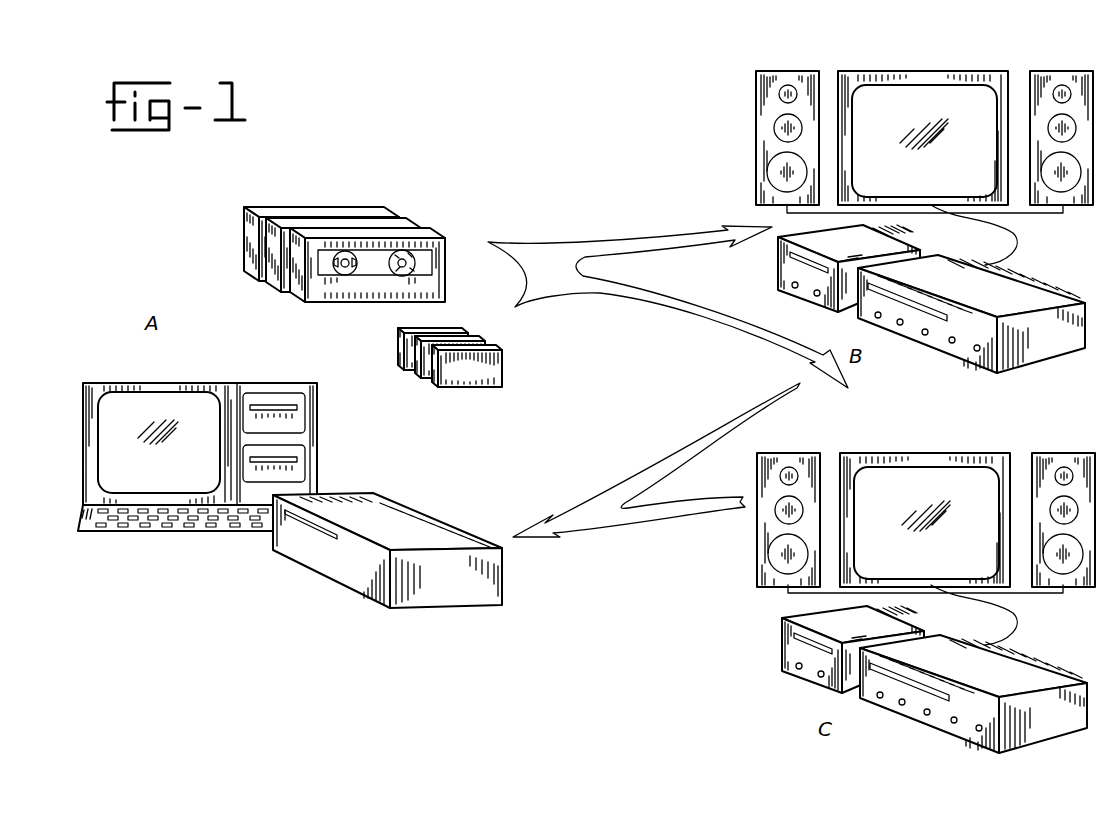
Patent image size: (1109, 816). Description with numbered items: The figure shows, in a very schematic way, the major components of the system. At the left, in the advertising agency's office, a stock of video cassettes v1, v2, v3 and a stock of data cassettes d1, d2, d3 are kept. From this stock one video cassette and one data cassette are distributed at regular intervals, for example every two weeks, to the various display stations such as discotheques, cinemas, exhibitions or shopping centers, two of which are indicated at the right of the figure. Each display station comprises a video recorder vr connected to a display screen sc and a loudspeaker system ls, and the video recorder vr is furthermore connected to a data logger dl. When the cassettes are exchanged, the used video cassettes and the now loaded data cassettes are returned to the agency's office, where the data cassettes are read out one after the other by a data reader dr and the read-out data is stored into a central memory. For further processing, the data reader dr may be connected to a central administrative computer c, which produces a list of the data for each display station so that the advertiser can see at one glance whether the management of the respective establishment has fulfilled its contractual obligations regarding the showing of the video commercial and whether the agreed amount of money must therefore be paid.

The video cassette v1 is at (244, 262).
The video cassette v2 is at (266, 279).
The video cassette v3 is at (296, 294).
The data cassette d1 is at (396, 352).
The data cassette d2 is at (413, 367).
The data cassette d3 is at (431, 377).
The central administrative computer c is at (98, 392).
The data reader dr is at (298, 555).
The loudspeaker system ls is at (791, 70).
The display screen sc is at (913, 71).
The data logger dl is at (785, 268).
The video recorder vr is at (1040, 354).